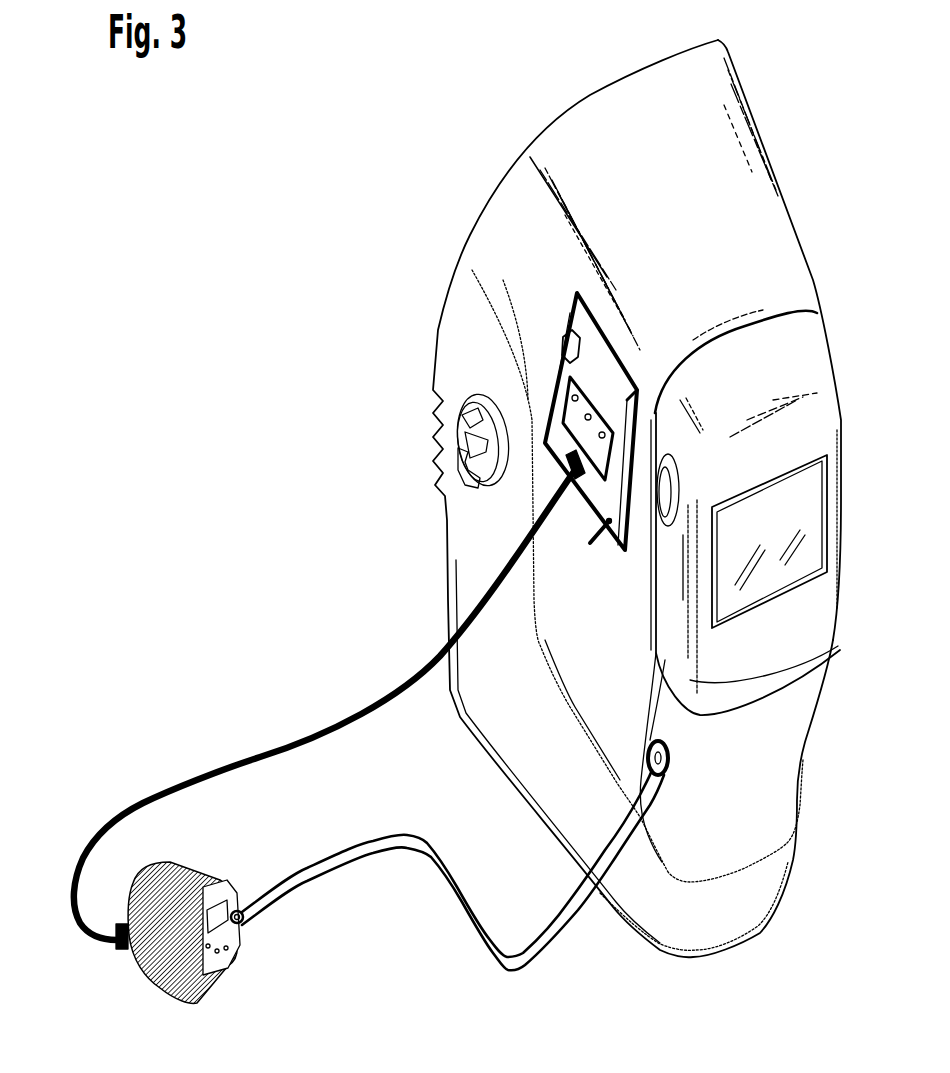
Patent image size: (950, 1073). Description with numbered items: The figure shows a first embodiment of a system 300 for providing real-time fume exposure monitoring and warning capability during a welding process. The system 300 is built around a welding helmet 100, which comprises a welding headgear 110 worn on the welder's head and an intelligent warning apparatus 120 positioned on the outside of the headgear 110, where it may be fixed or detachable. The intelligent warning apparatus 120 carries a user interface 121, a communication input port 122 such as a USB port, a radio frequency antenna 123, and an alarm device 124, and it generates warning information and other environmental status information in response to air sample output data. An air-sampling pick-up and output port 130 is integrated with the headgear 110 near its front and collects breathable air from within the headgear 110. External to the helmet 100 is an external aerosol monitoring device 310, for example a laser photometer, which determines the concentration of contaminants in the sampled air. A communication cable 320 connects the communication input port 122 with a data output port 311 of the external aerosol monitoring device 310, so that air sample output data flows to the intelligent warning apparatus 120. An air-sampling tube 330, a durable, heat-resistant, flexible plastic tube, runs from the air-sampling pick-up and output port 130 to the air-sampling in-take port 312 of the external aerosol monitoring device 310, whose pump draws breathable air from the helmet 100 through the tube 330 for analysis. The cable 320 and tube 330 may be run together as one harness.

The welding helmet 100 is at (551, 101).
The welding headgear 110 is at (737, 107).
The intelligent warning apparatus 120 is at (565, 300).
The user interface 121 is at (567, 400).
The communication input port 122 is at (566, 463).
The radio frequency antenna 123 is at (601, 550).
The alarm device 124 is at (578, 337).
The air-sampling pick-up and output port 130 is at (667, 776).
The system 300 is at (220, 305).
The external aerosol monitoring device 310 is at (160, 922).
The data output port 311 is at (118, 945).
The air-sampling in-take port 312 is at (237, 910).
The communication cable 320 is at (317, 732).
The air-sampling tube 330 is at (467, 923).